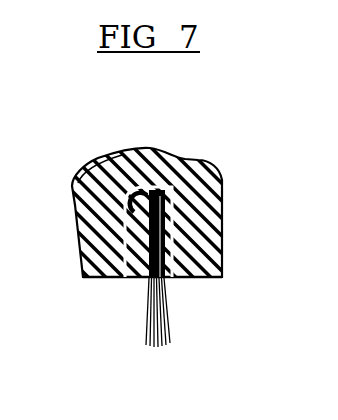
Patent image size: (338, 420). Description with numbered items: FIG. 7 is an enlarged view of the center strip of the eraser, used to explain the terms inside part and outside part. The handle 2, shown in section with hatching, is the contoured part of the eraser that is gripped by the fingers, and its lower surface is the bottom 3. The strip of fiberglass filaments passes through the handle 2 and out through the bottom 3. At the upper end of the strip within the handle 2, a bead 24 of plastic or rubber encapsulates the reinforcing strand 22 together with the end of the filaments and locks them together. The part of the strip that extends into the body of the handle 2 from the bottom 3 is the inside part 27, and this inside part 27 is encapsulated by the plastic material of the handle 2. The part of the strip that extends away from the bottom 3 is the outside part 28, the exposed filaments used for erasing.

The handle 2 is at (200, 166).
The bottom 3 is at (122, 279).
The reinforcing strand 22 is at (133, 208).
The bead 24 is at (148, 188).
The inside part 27 is at (173, 263).
The outside part 28 is at (170, 323).